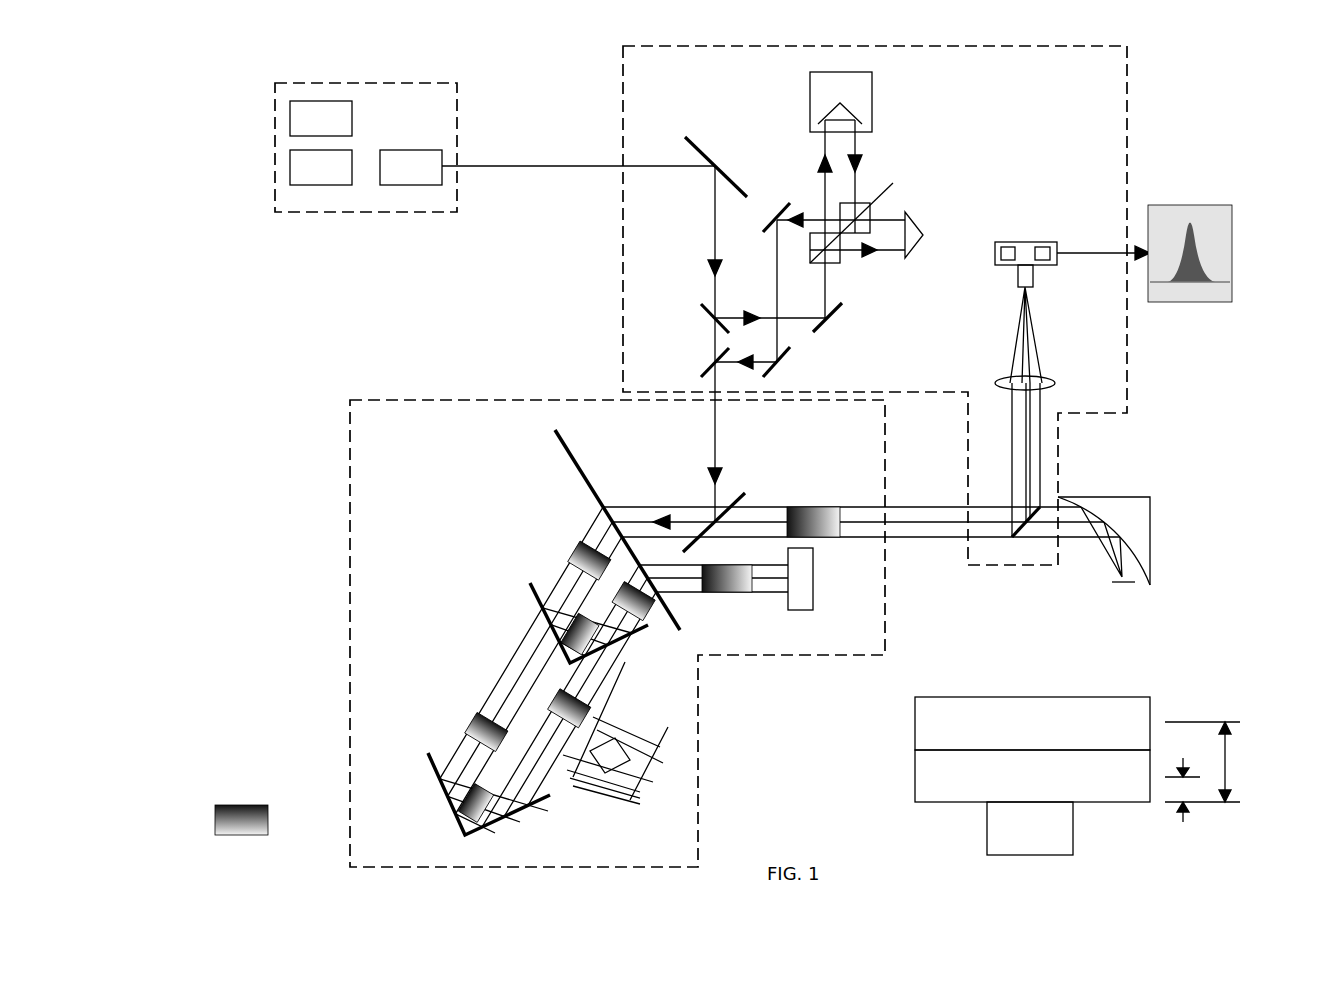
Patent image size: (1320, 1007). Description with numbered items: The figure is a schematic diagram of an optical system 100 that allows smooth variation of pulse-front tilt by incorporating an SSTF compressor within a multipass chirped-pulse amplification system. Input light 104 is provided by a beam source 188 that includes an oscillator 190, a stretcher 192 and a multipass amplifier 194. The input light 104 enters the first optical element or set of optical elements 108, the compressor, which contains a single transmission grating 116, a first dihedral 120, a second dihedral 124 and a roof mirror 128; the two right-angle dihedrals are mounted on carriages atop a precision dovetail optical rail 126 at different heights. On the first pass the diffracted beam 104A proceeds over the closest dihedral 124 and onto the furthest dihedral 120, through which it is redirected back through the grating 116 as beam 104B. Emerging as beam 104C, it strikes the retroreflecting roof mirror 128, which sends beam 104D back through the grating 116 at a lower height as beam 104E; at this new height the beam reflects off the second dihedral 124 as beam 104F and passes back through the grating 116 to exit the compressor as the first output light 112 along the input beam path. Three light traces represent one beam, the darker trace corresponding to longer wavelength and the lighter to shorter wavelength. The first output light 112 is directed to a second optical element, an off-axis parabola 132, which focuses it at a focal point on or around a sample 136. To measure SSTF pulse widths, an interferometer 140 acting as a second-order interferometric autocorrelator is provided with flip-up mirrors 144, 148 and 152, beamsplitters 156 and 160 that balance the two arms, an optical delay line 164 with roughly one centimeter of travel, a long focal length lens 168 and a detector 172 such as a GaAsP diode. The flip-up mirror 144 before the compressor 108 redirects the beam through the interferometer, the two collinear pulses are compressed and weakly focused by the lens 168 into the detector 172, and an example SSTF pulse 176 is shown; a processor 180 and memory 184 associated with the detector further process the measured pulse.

The optical system 100 is at (1230, 93).
The input light 104 is at (577, 166).
The diffracted beam 104A is at (468, 723).
The beam 104B is at (595, 709).
The beam 104C is at (728, 605).
The beam 104D is at (727, 567).
The beam 104E is at (653, 620).
The beam 104F is at (558, 551).
The first optical element or set of optical elements 108 is at (470, 400).
The first output light 112 is at (820, 497).
The single transmission grating 116 is at (568, 447).
The first dihedral 120 is at (430, 757).
The second dihedral 124 is at (528, 582).
The optical rail 126 is at (987, 848).
The roof mirror 128 is at (813, 593).
The off-axis parabola 132 is at (1150, 497).
The sample 136 is at (1113, 590).
The interferometer 140 is at (1128, 95).
The flip-up mirror 144 is at (700, 310).
The flip-up mirror 148 is at (700, 368).
The flip-up mirror 152 is at (1007, 547).
The beamsplitter 156 is at (833, 265).
The beamsplitter 160 is at (868, 203).
The optical delay line 164 is at (873, 102).
The lens 168 is at (1060, 382).
The detector 172 is at (1055, 242).
The SSTF pulse 176 is at (1190, 205).
The processor 180 is at (1042, 242).
The memory 184 is at (1000, 242).
The beam source 188 is at (458, 128).
The oscillator 190 is at (322, 101).
The stretcher 192 is at (345, 150).
The multipass amplifier 194 is at (395, 150).